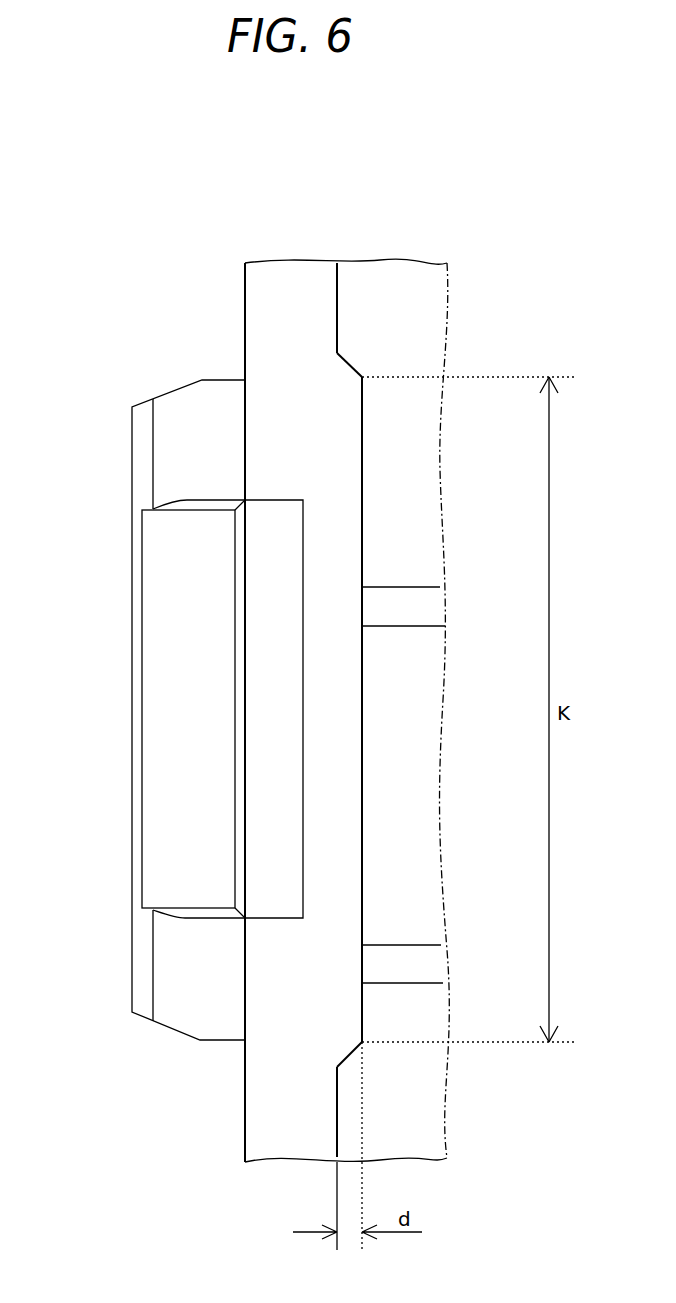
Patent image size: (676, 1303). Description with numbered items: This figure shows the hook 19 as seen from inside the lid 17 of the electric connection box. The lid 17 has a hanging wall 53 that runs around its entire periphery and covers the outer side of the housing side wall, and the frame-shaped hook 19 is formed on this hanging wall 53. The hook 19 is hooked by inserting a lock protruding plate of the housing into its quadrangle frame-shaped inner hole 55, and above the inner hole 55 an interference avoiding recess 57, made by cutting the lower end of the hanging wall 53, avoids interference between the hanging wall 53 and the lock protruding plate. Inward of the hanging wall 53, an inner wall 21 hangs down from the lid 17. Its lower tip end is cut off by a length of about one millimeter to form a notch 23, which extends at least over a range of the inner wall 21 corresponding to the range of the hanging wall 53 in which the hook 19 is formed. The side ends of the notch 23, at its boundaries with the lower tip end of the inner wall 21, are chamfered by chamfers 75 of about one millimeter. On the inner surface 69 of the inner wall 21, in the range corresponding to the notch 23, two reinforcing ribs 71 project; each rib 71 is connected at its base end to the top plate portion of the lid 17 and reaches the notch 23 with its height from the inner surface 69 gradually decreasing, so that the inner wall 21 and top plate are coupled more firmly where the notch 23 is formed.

The lid 17 is at (405, 248).
The hook 19 is at (112, 395).
The inner wall 21 is at (393, 320).
The notch 23 is at (362, 453).
The hanging wall 53 is at (245, 1137).
The inner hole 55 is at (205, 915).
The interference avoiding recess 57 is at (302, 723).
The inner surface 69 is at (403, 800).
The reinforcing rib 71 is at (400, 602).
The chamfer 75 is at (350, 365).